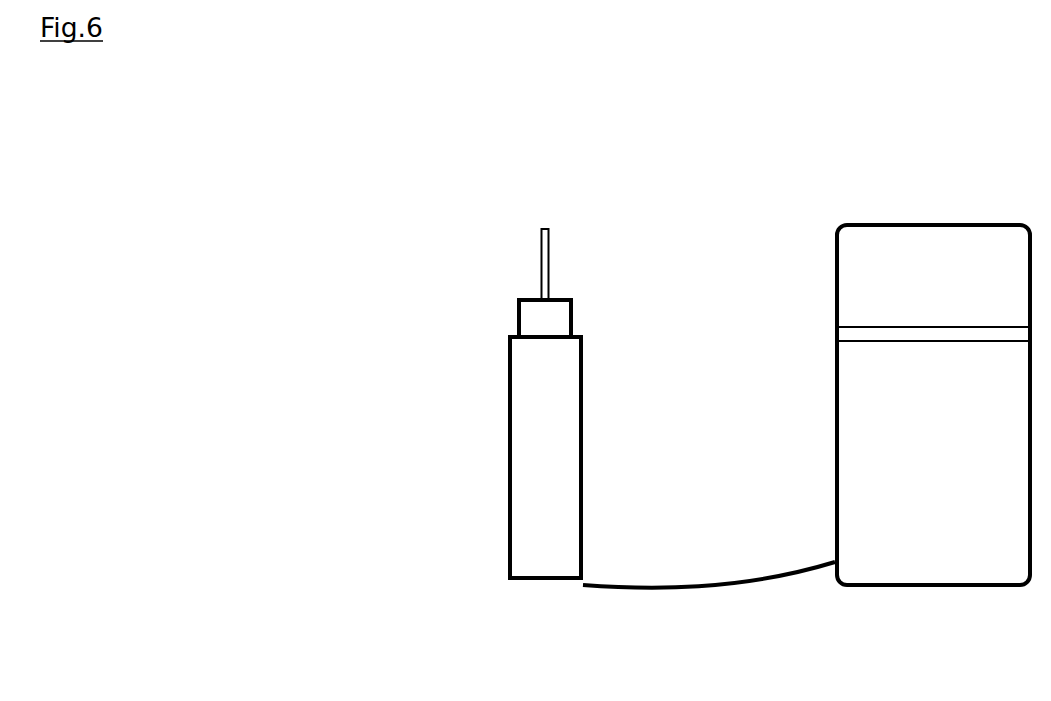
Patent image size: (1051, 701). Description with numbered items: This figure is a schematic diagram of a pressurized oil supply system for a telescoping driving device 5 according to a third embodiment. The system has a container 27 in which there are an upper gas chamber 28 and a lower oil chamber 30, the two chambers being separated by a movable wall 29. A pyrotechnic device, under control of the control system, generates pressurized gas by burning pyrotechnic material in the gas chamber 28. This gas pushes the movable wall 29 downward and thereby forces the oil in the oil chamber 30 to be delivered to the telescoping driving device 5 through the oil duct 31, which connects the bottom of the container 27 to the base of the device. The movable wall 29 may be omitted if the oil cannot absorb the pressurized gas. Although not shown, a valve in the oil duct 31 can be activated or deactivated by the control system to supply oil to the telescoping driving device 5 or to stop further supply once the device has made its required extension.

The telescoping driving device 5 is at (512, 407).
The container 27 is at (929, 135).
The gas chamber 28 is at (895, 236).
The movable wall 29 is at (892, 323).
The oil chamber 30 is at (1004, 557).
The oil duct 31 is at (702, 601).